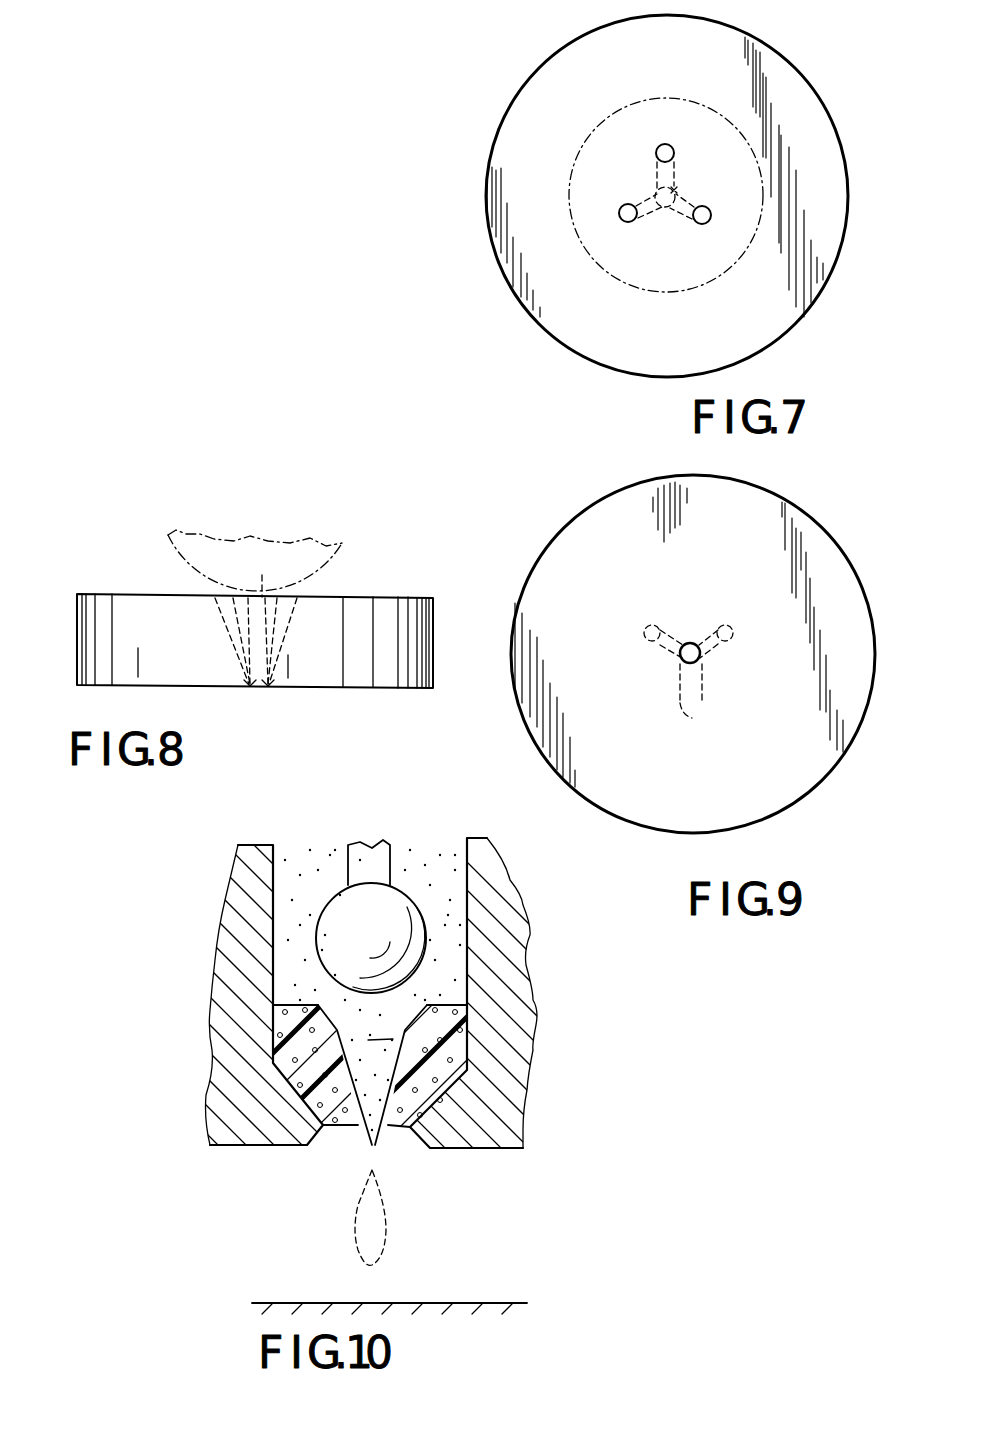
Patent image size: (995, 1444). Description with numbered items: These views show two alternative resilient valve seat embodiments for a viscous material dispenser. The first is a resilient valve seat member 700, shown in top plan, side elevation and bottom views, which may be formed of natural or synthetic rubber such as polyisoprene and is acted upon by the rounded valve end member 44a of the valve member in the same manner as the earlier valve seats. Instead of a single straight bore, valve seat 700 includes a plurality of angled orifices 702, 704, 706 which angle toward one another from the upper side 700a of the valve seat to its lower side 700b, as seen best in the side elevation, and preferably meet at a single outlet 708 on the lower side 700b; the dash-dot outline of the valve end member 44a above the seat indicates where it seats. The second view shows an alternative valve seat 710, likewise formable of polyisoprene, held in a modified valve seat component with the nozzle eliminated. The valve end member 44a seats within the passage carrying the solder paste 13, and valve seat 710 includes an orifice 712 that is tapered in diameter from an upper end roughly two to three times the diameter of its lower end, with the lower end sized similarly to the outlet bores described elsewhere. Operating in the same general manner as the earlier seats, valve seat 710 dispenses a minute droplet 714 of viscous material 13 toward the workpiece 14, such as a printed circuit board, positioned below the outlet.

In FIG. 7, the resilient valve seat member 700 is at (806, 80).
In FIG. 8, the resilient valve seat member 700 is at (76, 613).
In FIG. 7, the upper side of valve seat 700a is at (667, 345).
In FIG. 8, the upper side of valve seat 700a is at (417, 599).
In FIG. 8, the lower side of valve seat 700b is at (377, 689).
In FIG. 9, the lower side of valve seat 700b is at (712, 795).
In FIG. 7, the rounded valve end member 44a is at (683, 98).
In FIG. 8, the rounded valve end member 44a is at (200, 573).
In FIG. 10, the rounded valve end member 44a is at (371, 916).
In FIG. 7, the angled orifice 702 is at (673, 148).
In FIG. 8, the angled orifice 702 is at (265, 617).
In FIG. 9, the angled orifice 702 is at (700, 718).
In FIG. 7, the angled orifice 704 is at (631, 222).
In FIG. 8, the angled orifice 704 is at (220, 627).
In FIG. 9, the angled orifice 704 is at (642, 640).
In FIG. 7, the angled orifice 706 is at (701, 224).
In FIG. 8, the angled orifice 706 is at (286, 625).
In FIG. 9, the angled orifice 706 is at (734, 632).
In FIG. 7, the single outlet 708 is at (680, 190).
In FIG. 8, the single outlet 708 is at (250, 690).
In FIG. 9, the single outlet 708 is at (688, 644).
In FIG. 10, the solder paste 13 is at (308, 868).
In FIG. 10, the valve seat 710 is at (450, 1042).
In FIG. 10, the orifice 712 is at (357, 1130).
In FIG. 10, the droplet 714 is at (387, 1223).
In FIG. 10, the workpiece 14 is at (482, 1305).